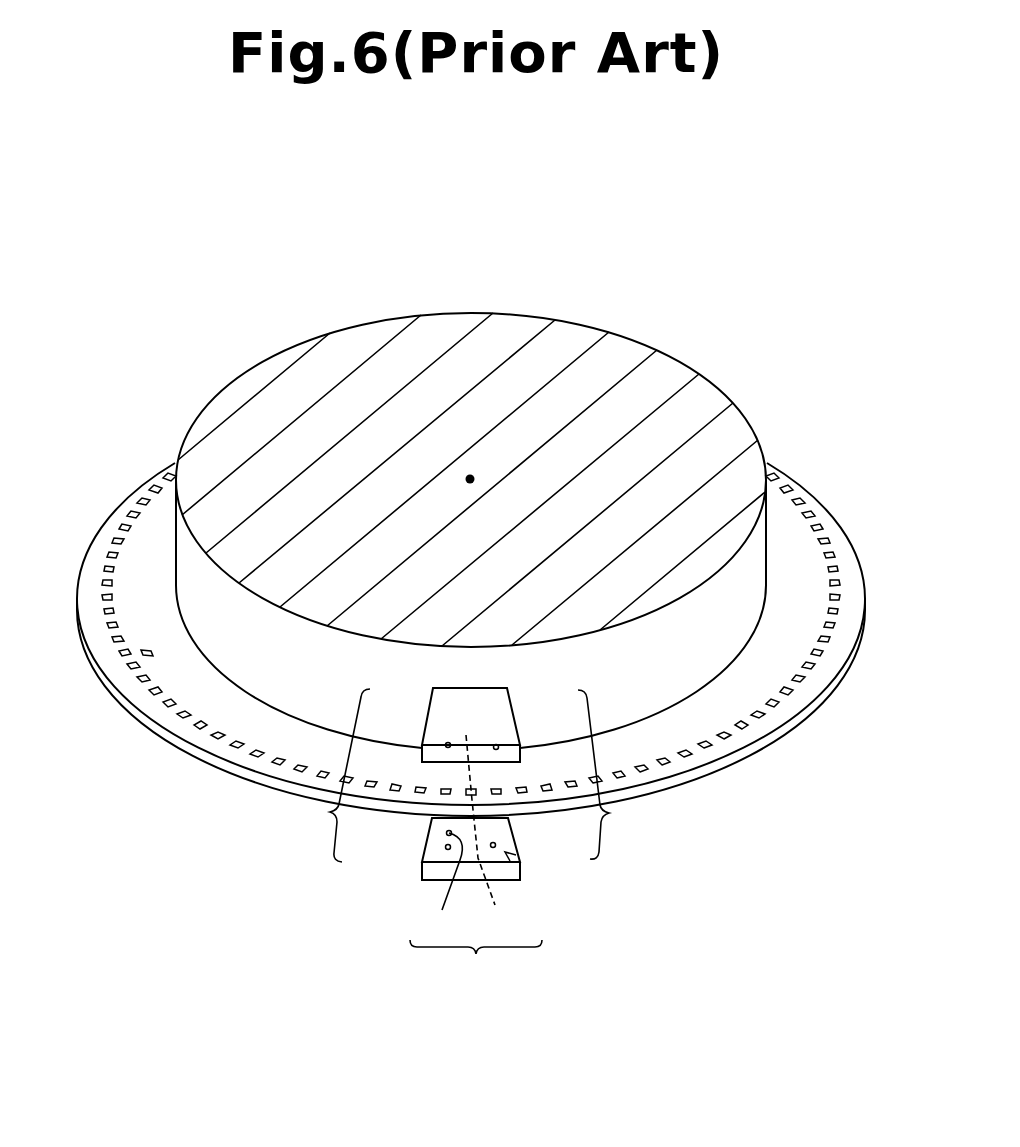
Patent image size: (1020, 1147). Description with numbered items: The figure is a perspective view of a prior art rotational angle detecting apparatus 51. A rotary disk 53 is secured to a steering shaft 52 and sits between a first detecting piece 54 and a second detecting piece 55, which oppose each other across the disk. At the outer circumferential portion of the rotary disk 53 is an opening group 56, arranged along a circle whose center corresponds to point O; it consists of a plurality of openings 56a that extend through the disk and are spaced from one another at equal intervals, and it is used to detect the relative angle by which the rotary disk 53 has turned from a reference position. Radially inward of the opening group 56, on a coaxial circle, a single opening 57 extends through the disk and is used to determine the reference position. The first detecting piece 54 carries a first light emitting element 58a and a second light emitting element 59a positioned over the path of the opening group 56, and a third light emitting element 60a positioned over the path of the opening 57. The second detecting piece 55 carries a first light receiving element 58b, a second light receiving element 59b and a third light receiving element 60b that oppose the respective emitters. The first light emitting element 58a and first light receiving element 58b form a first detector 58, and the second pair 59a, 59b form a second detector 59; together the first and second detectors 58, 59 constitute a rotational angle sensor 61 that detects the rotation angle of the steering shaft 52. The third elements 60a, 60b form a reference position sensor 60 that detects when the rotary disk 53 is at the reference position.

The rotational angle detecting apparatus 51 is at (790, 423).
The steering shaft 52 is at (582, 340).
The rotary disk 53 is at (848, 538).
The first detecting piece 54 is at (460, 697).
The second detecting piece 55 is at (422, 878).
The opening group 56 is at (806, 689).
The openings 56a is at (828, 636).
The opening 57 is at (152, 640).
The first detector 58 is at (328, 775).
The first light emitting element 58a is at (448, 745).
The first light receiving element 58b is at (446, 847).
The second detector 59 is at (613, 774).
The second light emitting element 59a is at (496, 747).
The second light receiving element 59b is at (495, 845).
The reference position sensor 60 is at (476, 967).
The third light emitting element 60a is at (503, 840).
The third light receiving element 60b is at (439, 888).
The rotational angle sensor 61 is at (506, 853).